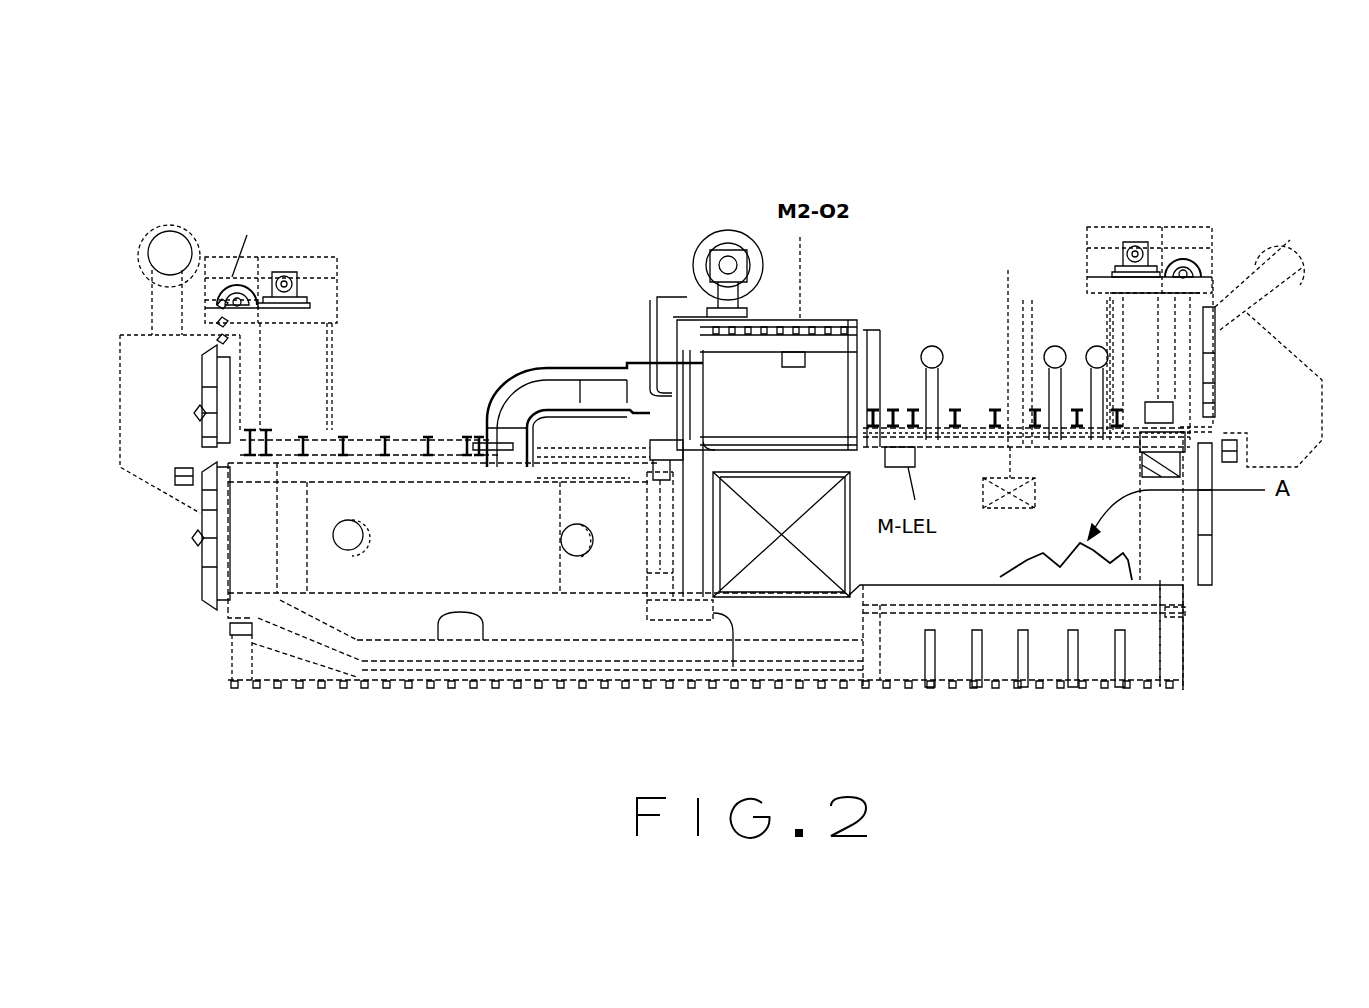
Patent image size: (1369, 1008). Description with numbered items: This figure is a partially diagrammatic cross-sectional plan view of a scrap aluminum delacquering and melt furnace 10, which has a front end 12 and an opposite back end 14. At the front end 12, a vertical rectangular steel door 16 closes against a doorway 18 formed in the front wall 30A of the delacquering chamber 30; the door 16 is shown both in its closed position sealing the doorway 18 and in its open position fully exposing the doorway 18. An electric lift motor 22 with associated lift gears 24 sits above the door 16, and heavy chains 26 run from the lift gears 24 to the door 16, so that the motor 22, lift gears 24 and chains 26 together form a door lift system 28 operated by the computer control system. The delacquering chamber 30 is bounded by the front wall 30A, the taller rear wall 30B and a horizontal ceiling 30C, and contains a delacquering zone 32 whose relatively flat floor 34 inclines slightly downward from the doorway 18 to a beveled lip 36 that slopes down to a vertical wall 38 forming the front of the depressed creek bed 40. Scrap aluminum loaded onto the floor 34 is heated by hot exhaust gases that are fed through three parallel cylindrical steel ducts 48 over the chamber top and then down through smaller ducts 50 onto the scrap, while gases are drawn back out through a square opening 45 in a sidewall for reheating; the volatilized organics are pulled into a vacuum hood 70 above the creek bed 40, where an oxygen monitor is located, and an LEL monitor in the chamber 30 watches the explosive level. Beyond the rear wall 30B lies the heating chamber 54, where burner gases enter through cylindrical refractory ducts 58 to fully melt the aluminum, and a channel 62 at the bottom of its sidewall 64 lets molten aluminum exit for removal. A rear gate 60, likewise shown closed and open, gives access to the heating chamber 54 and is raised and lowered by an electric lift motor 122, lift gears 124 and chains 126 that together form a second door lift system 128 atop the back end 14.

The scrap aluminum delacquering and melt furnace 10 is at (808, 148).
The front end 12 is at (1067, 162).
The back end 14 is at (320, 185).
The door 16 is at (1215, 368).
The doorway 18 is at (1193, 593).
The electric lift motor 22 is at (1137, 237).
The lift gears 24 is at (1184, 250).
The chains 26 is at (1206, 311).
The door lift system 28 is at (1203, 173).
The delacquering chamber 30 is at (955, 478).
The front wall 30A is at (1162, 570).
The rear wall 30B is at (730, 625).
The ceiling 30C is at (1027, 345).
The delacquering zone 32 is at (987, 547).
The floor 34 is at (973, 590).
The beveled lip 36 is at (855, 600).
The vertical wall 38 is at (843, 600).
The creek bed 40 is at (772, 617).
The square opening 45 is at (1006, 346).
The cylindrical steel ducts 48 is at (928, 348).
The cylindrical steel ducts 50 is at (928, 393).
The heating chamber 54 is at (435, 570).
The refractory ducts 58 is at (352, 520).
The rear gate 60 is at (203, 397).
The channel 62 is at (458, 630).
The sidewall 64 is at (530, 556).
The vacuum hood 70 is at (805, 380).
The electric lift motor 122 is at (292, 272).
The lift gears 124 is at (225, 245).
The chains 126 is at (208, 323).
The door lift system 128 is at (247, 233).